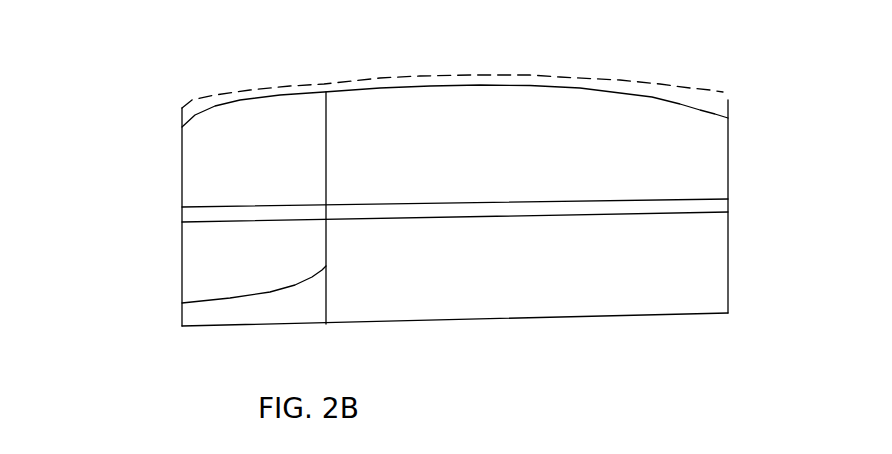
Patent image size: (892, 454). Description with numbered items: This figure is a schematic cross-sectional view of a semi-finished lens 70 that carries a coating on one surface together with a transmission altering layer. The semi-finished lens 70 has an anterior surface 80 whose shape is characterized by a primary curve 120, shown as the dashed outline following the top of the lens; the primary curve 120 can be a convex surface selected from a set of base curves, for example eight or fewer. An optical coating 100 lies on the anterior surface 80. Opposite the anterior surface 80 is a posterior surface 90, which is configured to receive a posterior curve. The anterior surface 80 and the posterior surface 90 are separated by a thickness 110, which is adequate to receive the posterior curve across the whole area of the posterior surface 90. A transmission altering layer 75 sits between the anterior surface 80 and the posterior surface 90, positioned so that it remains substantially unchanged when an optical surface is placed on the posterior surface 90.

The semi-finished lens 70 is at (164, 190).
The transmission altering layer 75 is at (700, 203).
The anterior surface 80 is at (652, 98).
The posterior surface 90 is at (532, 320).
The optical coating 100 is at (621, 84).
The thickness 110 is at (182, 303).
The primary curve 120 is at (693, 88).